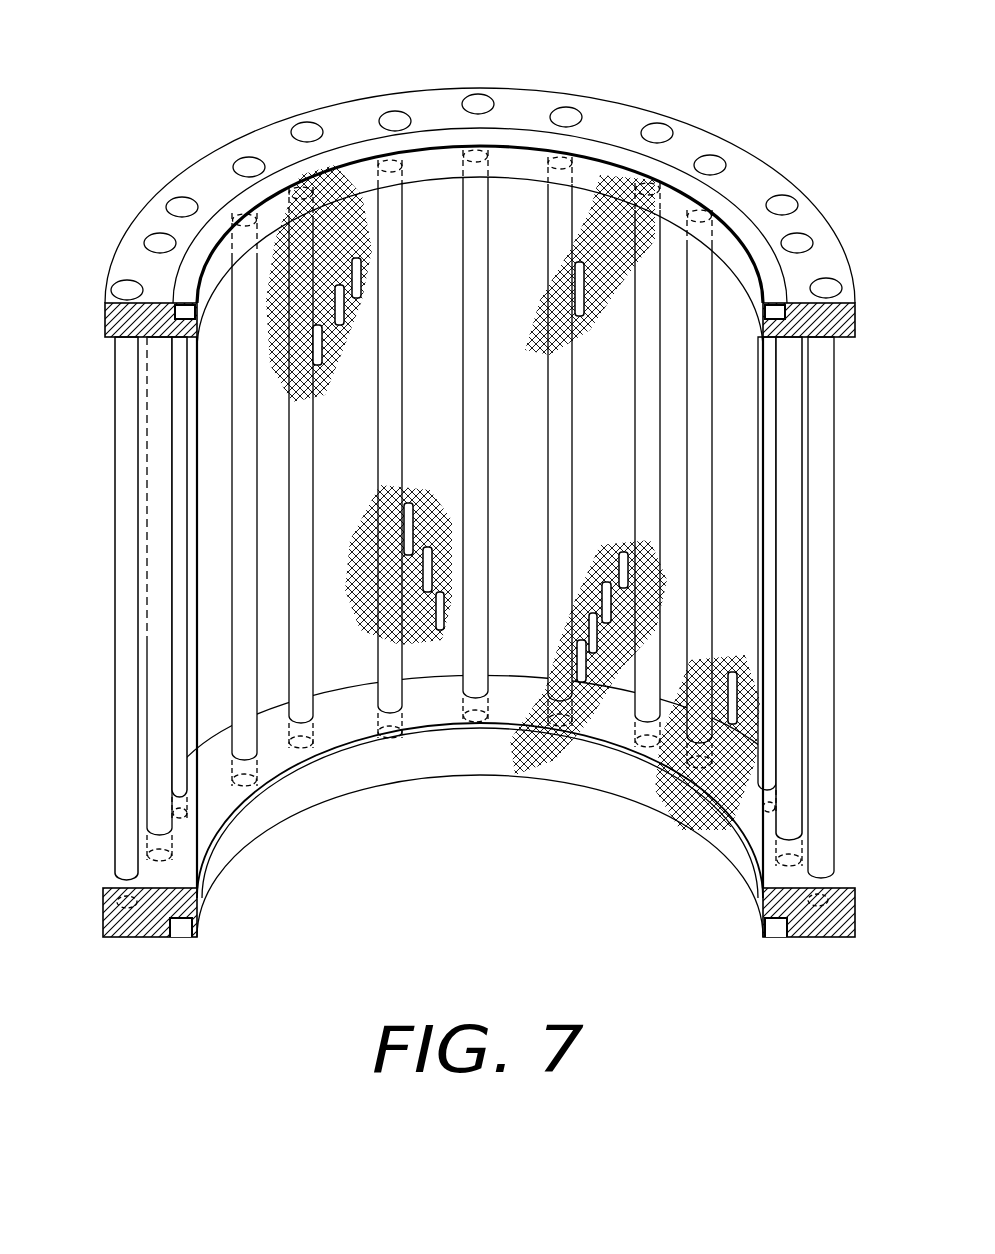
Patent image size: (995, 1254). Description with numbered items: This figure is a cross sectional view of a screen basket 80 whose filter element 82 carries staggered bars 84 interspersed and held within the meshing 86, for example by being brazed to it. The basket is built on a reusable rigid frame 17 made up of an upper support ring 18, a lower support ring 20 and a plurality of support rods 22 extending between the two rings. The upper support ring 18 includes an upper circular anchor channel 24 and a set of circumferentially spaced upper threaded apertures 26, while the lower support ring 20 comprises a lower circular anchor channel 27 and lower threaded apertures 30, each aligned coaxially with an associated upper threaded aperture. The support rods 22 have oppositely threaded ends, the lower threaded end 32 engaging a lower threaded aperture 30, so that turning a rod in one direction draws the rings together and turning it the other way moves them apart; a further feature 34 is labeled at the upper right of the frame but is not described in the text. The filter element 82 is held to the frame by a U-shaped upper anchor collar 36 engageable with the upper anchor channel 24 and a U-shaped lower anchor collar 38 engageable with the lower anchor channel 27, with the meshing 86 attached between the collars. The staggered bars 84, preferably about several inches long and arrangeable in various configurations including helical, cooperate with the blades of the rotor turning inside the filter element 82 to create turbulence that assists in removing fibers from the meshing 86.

The rigid frame 17 is at (540, 73).
The upper support ring 18 is at (270, 150).
The lower support ring 20 is at (338, 765).
The support rods 22 is at (123, 408).
The upper circular anchor channel 24 is at (137, 325).
The upper threaded apertures 26 is at (247, 232).
The lower circular anchor channel 27 is at (170, 935).
The lower threaded apertures 30 is at (112, 325).
The threaded end 32 is at (123, 873).
The shoulder 34 is at (791, 336).
The upper anchor collar 36 is at (190, 286).
The lower anchor collar 38 is at (217, 870).
The screen basket 80 is at (788, 138).
The filter element 82 is at (614, 224).
The staggered bars 84 is at (318, 368).
The meshing 86 is at (427, 650).